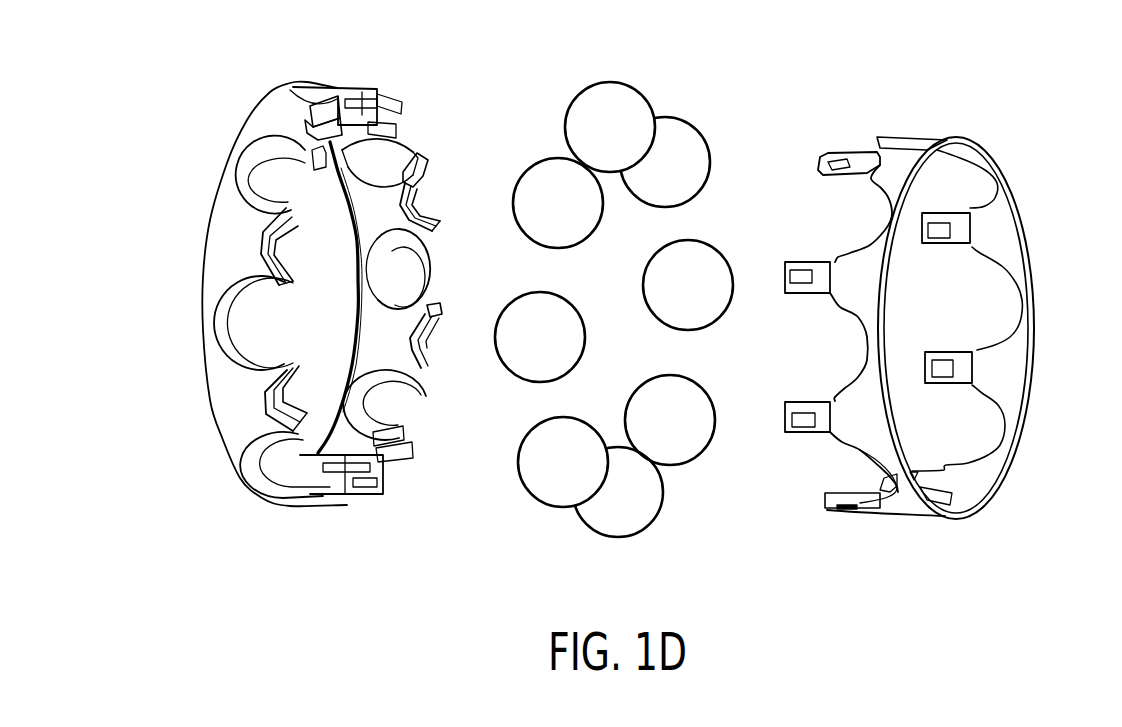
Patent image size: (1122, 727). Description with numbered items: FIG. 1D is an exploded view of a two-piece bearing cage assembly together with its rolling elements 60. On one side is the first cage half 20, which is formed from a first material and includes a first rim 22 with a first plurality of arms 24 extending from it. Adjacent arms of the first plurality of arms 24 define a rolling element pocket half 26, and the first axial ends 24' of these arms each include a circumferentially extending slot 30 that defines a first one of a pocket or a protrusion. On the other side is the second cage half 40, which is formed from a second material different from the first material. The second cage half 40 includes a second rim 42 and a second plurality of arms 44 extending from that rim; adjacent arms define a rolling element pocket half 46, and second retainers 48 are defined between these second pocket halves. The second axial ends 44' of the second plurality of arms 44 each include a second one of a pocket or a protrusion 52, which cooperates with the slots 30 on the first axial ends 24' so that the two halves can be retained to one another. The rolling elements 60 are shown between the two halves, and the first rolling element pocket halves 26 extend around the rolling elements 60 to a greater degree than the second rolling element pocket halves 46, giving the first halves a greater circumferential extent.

The first cage half 20 is at (246, 106).
The first rim 22 is at (217, 238).
The first plurality of arms 24 is at (338, 261).
The first axial ends 24' is at (414, 245).
The rolling element pocket half 26 is at (250, 165).
The circumferentially extending slot 30 is at (323, 110).
The second cage half 40 is at (1020, 174).
The second rim 42 is at (1008, 254).
The second plurality of arms 44 is at (993, 284).
The second axial ends 44' is at (831, 181).
The rolling element pocket half 46 is at (1000, 423).
The second retainers 48 is at (838, 160).
The pocket or protrusion 52 is at (802, 281).
The rolling elements 60 is at (612, 98).